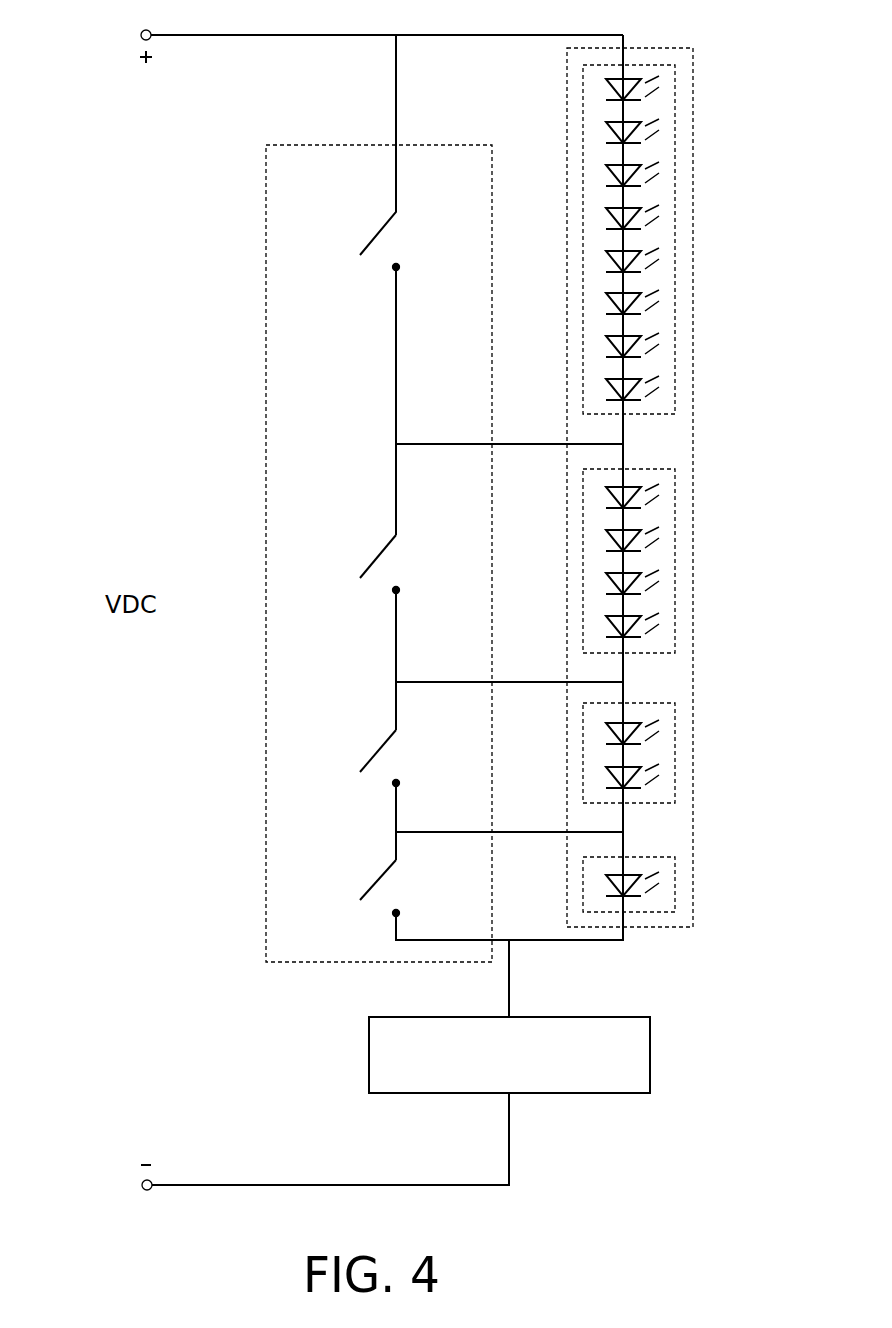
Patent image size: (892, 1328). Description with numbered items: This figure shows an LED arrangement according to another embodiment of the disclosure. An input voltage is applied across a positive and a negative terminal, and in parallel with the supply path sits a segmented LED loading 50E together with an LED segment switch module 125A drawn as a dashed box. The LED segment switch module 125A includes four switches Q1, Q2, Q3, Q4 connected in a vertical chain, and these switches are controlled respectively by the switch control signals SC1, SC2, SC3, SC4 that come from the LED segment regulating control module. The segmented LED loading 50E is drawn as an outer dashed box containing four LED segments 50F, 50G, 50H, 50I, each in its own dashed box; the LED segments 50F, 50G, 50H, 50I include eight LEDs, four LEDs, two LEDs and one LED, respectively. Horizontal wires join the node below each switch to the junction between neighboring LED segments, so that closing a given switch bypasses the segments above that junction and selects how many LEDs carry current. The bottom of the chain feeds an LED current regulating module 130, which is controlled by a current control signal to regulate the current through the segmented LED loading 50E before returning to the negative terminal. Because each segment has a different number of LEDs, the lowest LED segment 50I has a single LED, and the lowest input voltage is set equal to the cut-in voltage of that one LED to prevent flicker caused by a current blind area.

The segmented LED loading 50E is at (657, 48).
The LED segment 50F is at (675, 239).
The LED segment 50G is at (675, 560).
The LED segment 50H is at (675, 750).
The LED segment 50I is at (675, 880).
The LED segment switch module 125A is at (285, 145).
The LED current regulating module 130 is at (578, 1083).
The switch control signal SC1 is at (346, 145).
The switch control signal SC2 is at (346, 556).
The switch control signal SC3 is at (346, 751).
The switch control signal SC4 is at (346, 880).
The switch Q1 is at (421, 384).
The switch Q2 is at (421, 643).
The switch Q3 is at (421, 805).
The switch Q4 is at (421, 898).